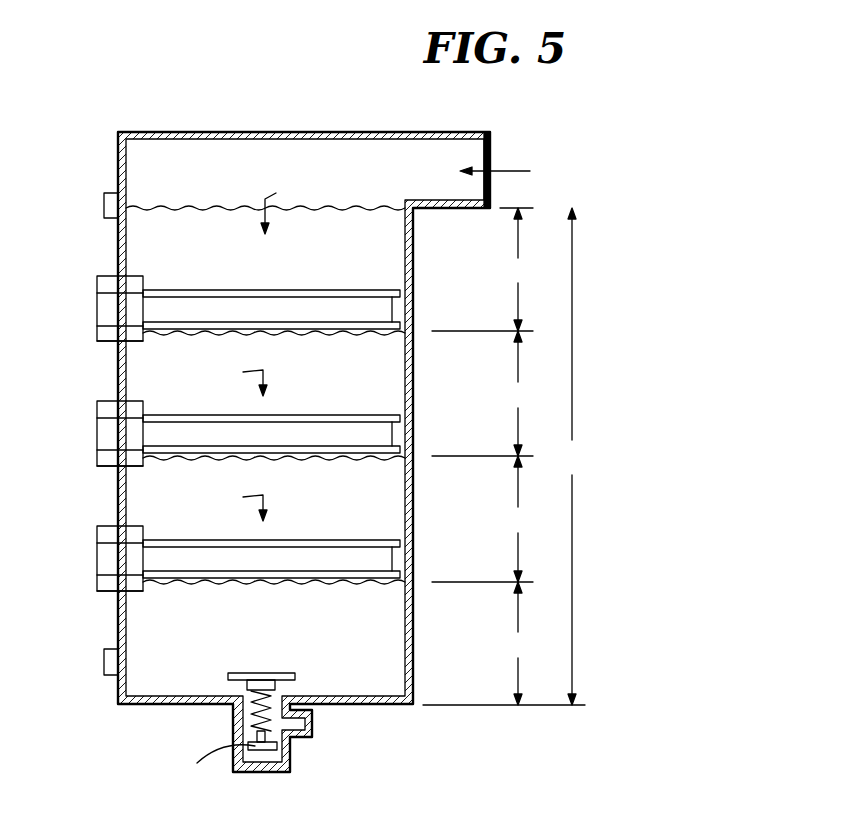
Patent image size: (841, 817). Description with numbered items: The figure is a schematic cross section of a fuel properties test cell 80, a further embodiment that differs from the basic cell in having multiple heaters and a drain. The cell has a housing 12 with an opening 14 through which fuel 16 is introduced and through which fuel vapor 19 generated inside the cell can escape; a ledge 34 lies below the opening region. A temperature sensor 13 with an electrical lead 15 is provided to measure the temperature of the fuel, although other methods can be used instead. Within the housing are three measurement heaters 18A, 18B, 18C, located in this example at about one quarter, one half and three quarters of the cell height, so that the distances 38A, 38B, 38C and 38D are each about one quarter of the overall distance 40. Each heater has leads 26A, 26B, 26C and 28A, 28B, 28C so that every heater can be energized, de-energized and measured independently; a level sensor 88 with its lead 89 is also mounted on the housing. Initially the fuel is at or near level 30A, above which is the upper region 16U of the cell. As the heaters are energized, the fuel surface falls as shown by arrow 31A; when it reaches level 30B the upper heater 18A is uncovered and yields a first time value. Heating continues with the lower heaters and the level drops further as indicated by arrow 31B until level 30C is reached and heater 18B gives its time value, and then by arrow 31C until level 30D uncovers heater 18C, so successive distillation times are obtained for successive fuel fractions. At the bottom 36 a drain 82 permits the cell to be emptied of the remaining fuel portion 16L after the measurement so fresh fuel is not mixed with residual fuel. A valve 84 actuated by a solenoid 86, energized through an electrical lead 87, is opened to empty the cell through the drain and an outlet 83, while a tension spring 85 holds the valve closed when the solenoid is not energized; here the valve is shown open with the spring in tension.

The test cell 80 is at (285, 87).
The housing 12 is at (166, 132).
The opening 14 is at (446, 138).
The fuel 16 is at (517, 168).
The fuel vapor 19 is at (186, 189).
The ledge wall 34 is at (452, 210).
The bottom 36 is at (379, 697).
The temperature sensor 13 is at (93, 698).
The upper chamber 16U is at (188, 259).
The remaining fuel portion 16L is at (250, 625).
The level 30A is at (377, 209).
The level 30B is at (375, 338).
The level 30C is at (375, 463).
The level 30D is at (375, 588).
The heater 18A is at (320, 282).
The heater 18B is at (320, 407).
The heater 18C is at (320, 532).
The lead 26A is at (97, 293).
The lead 26B is at (97, 418).
The lead 26C is at (97, 543).
The lead 28A is at (97, 327).
The lead 28B is at (97, 451).
The lead 28C is at (97, 576).
The arrow 31A is at (286, 201).
The arrow 31B is at (231, 378).
The third flow direction 31C is at (231, 503).
The level sensor 88 is at (106, 192).
The sensor lead 89 is at (104, 205).
The electrical lead 15 is at (102, 662).
The distance 38A is at (486, 269).
The distance 38B is at (486, 393).
The distance 38C is at (486, 519).
The distance 38D is at (504, 643).
The distance 40 is at (572, 456).
The drain 82 is at (230, 655).
The valve 84 is at (276, 673).
The tension spring 85 is at (281, 692).
The solenoid 86 is at (286, 748).
The outlet 83 is at (313, 722).
The electrical lead 87 is at (212, 748).